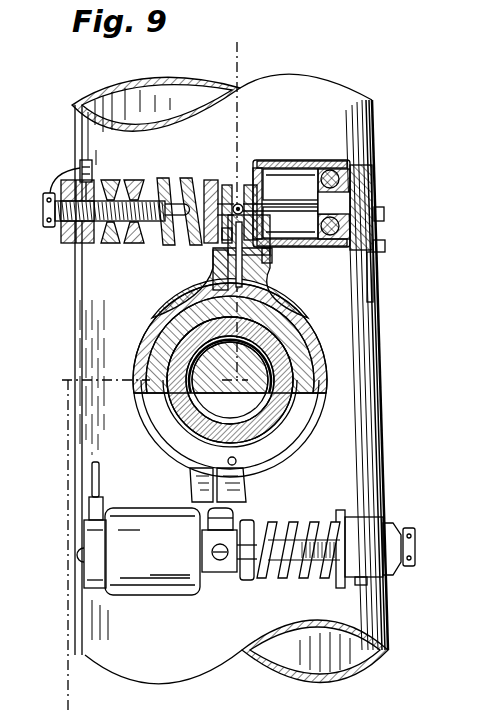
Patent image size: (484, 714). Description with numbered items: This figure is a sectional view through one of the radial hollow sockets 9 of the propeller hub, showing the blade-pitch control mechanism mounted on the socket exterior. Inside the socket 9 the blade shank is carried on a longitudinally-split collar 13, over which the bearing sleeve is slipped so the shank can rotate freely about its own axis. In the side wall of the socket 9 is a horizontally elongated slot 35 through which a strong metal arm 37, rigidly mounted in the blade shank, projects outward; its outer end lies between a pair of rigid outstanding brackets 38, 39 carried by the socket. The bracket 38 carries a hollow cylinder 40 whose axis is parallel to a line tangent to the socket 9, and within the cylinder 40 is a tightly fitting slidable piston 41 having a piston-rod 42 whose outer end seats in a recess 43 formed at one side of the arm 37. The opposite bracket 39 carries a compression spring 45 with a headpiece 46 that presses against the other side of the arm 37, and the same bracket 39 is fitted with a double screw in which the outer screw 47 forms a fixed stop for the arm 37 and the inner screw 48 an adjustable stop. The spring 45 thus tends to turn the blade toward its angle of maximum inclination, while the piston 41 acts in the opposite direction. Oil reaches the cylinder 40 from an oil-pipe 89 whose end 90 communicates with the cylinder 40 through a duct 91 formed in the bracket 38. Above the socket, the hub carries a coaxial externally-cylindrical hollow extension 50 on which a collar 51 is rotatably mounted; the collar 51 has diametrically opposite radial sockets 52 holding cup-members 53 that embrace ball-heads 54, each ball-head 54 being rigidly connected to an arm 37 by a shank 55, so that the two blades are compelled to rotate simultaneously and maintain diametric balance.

The hollow socket 9 is at (80, 98).
The longitudinally-split collar 13 is at (253, 58).
The horizontally elongated slot 35 is at (182, 186).
The metal arm 37 is at (240, 203).
The bracket 38 is at (372, 178).
The bracket 39 is at (76, 250).
The hollow cylinder 40 is at (300, 162).
The piston 41 is at (323, 168).
The piston-rod 42 is at (290, 203).
The recess 43 is at (258, 176).
The compression spring 45 is at (137, 188).
The headpiece 46 is at (211, 186).
The outer screw 47 is at (112, 224).
The inner screw 48 is at (44, 207).
The externally-cylindrical hollow extension 50 is at (165, 337).
The collar 51 is at (318, 356).
The radial socket 52 is at (270, 277).
The cup-member 53 is at (215, 258).
The ball-head 54 is at (270, 256).
The shank 55 is at (226, 240).
The oil-pipe 89 is at (373, 274).
The oil-pipe end 90 is at (385, 246).
The duct 91 is at (384, 214).